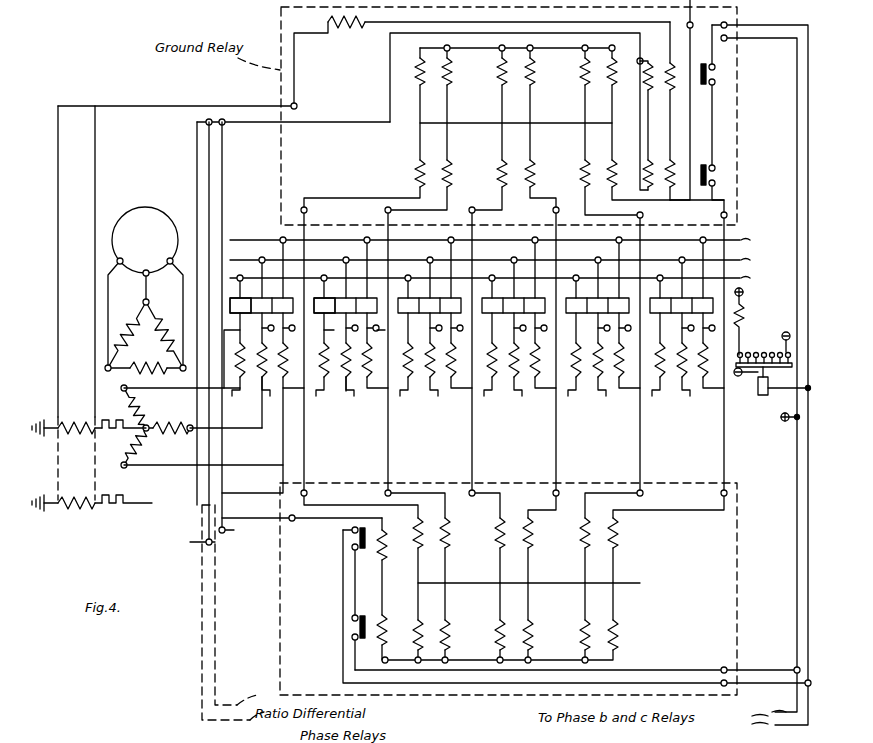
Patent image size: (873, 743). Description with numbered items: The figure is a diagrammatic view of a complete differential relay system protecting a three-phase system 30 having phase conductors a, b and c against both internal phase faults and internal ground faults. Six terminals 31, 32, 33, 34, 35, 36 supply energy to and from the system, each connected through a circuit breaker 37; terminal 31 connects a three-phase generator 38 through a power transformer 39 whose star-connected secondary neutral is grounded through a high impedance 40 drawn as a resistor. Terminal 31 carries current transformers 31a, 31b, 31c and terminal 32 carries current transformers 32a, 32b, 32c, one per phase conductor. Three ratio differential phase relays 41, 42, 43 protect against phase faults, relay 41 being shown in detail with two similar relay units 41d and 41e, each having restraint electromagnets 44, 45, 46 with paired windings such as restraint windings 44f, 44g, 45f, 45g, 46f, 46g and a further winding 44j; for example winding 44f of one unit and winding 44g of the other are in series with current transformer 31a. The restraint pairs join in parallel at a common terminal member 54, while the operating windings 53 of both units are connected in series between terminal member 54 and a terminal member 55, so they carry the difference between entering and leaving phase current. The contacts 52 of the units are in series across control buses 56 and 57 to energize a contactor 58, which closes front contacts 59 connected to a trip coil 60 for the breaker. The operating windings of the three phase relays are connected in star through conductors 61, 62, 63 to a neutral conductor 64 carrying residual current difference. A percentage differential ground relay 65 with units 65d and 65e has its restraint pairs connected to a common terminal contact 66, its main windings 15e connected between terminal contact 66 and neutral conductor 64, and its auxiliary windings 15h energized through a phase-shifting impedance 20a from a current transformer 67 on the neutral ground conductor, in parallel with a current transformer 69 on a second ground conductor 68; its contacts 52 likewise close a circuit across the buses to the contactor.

The main energizing winding 15e is at (652, 78).
The auxiliary energizing winding 15h is at (668, 70).
The impedance 20a is at (344, 24).
The system 30 is at (262, 240).
The terminal 31 is at (243, 413).
The current transformer 31a is at (283, 377).
The current transformer 31b is at (266, 382).
The current transformer 31c is at (232, 352).
The terminal 32 is at (333, 413).
The current transformer 32a is at (370, 362).
The current transformer 32b is at (356, 382).
The current transformer 32c is at (318, 362).
The terminal 33 is at (424, 413).
The terminal 34 is at (519, 413).
The terminal 35 is at (594, 413).
The terminal 36 is at (682, 413).
The circuit breaker 37 is at (241, 304).
The three-phase generator 38 is at (140, 209).
The power transformer 39 is at (114, 386).
The high impedance 40 is at (120, 430).
The phase relay 41 is at (366, 482).
The relay unit 41d is at (684, 542).
The relay unit 41e is at (684, 640).
The phase relay 42 is at (224, 494).
The phase relay 43 is at (202, 571).
The restraint electromagnet 44 is at (558, 71).
The restraint winding 44f is at (412, 636).
The restraint winding 44g is at (552, 81).
The coil winding 44j is at (608, 84).
The restraint electromagnet 45 is at (479, 71).
The restraint winding 45f is at (534, 168).
The restraint winding 45g is at (500, 172).
The restraint electromagnet 46 is at (411, 56).
The restraint winding 46f is at (450, 78).
The restraint winding 46g is at (420, 78).
The contacts 52 is at (712, 65).
The operating winding 53 is at (376, 556).
The terminal member 54 is at (352, 664).
The terminal member 55 is at (226, 532).
The control bus 56 is at (796, 500).
The control bus 57 is at (806, 528).
The contactor 58 is at (760, 392).
The front contacts 59 is at (792, 368).
The trip coil 60 is at (747, 310).
The conductor 61 is at (195, 168).
The conductor 62 is at (212, 182).
The conductor 63 is at (224, 160).
The neutral conductor 64 is at (230, 124).
The ground relay 65 is at (280, 14).
The relay unit 65d is at (382, 172).
The relay unit 65e is at (378, 86).
The terminal contact 66 is at (640, 60).
The current transformer 67 is at (80, 424).
The ground conductor 68 is at (136, 508).
The current transformer 69 is at (80, 494).